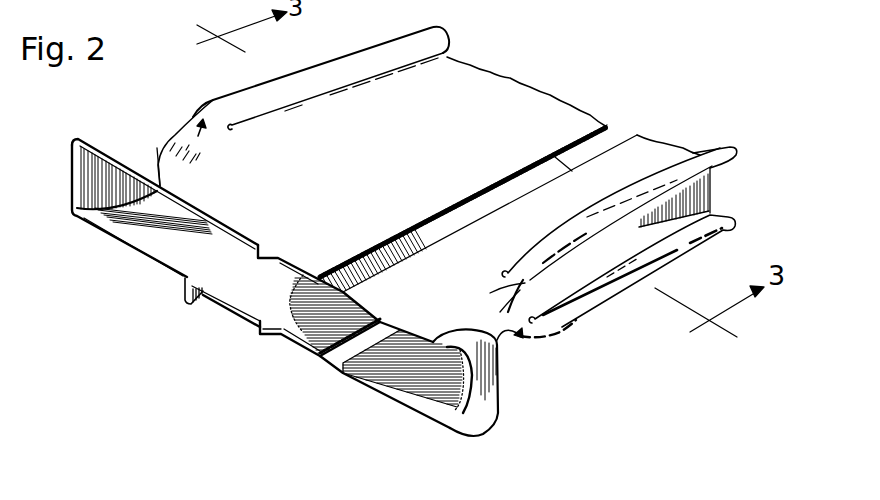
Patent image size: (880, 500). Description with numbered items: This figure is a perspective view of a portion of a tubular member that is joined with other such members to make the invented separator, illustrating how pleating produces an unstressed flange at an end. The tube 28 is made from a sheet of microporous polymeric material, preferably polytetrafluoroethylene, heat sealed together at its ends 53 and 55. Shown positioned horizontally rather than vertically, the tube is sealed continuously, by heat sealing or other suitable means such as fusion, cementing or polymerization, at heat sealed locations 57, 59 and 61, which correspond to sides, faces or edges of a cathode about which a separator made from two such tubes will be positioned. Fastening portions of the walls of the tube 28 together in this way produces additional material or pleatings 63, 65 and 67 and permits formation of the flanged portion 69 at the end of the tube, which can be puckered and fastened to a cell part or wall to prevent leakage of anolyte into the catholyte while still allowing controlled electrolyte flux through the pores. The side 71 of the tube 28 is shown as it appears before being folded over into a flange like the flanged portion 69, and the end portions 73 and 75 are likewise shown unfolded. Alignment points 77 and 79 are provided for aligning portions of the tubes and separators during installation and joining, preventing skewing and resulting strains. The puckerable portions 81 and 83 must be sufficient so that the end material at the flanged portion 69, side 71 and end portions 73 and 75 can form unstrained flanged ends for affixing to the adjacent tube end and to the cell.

The tube 28 is at (518, 83).
The end 53 is at (184, 292).
The end 55 is at (212, 305).
The heat sealed location 57 is at (282, 111).
The heat sealed location 59 is at (562, 231).
The heat sealed location 61 is at (557, 310).
The pleating 63 is at (295, 78).
The pleating 65 is at (733, 160).
The pleating 67 is at (728, 222).
The flanged portion 69 is at (487, 415).
The side 71 is at (70, 180).
The end portion 73 is at (157, 147).
The end portion 75 is at (133, 246).
The alignment point 77 is at (284, 338).
The alignment point 79 is at (268, 246).
The puckerable portion 81 is at (158, 147).
The puckerable portion 83 is at (500, 360).